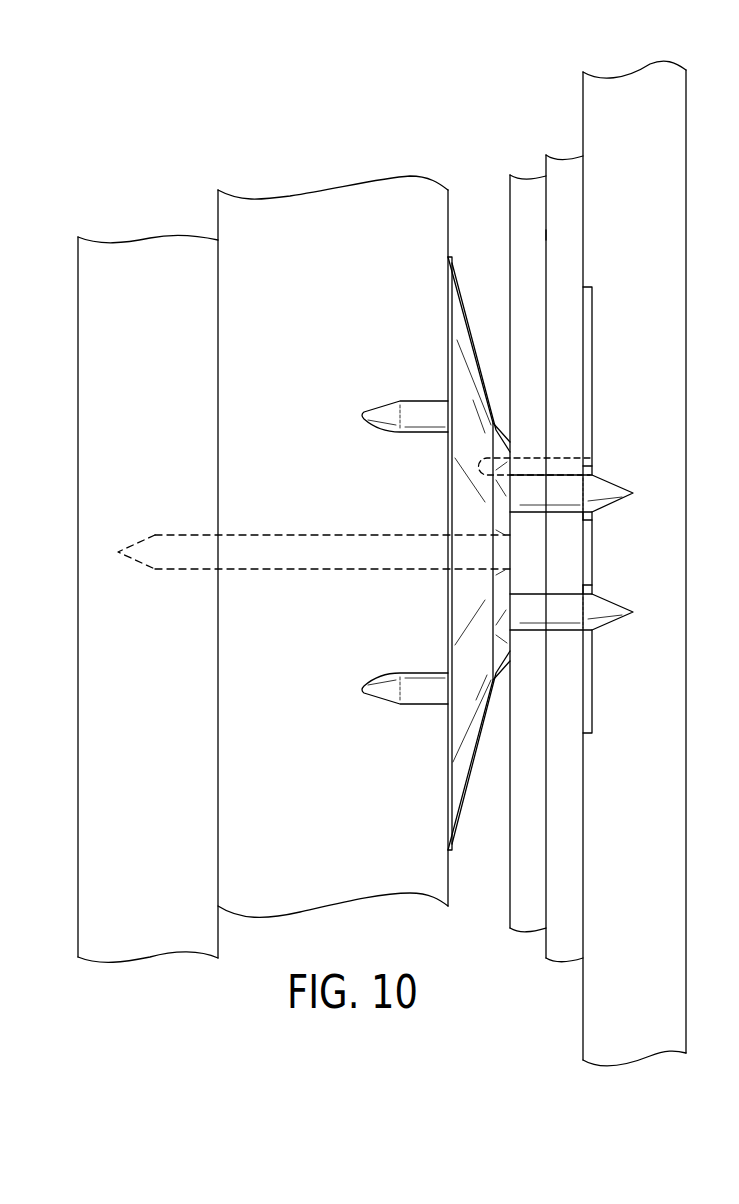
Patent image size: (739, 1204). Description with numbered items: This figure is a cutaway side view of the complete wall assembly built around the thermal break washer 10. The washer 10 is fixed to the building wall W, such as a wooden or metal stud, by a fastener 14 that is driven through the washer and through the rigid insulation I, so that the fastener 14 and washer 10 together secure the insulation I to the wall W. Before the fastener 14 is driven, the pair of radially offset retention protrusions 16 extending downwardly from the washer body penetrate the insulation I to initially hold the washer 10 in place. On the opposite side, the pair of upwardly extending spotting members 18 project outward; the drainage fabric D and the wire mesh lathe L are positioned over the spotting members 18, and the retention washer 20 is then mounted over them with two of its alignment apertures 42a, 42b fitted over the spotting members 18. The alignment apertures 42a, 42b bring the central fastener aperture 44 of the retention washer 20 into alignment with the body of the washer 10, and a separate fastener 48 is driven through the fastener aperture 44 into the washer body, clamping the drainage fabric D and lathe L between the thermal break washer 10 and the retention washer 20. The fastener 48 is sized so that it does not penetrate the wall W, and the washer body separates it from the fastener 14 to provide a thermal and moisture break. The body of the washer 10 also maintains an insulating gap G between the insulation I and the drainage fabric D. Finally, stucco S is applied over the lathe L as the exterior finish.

The wall W is at (102, 283).
The insulation I is at (265, 218).
The insulating gap G is at (472, 205).
The drainage fabric D is at (533, 193).
The wire mesh lathe L is at (560, 227).
The stucco S is at (638, 85).
The retention washer 20 is at (593, 322).
The thermal break washer 10 is at (467, 790).
The retention protrusions 16 is at (416, 400).
The spotting members 18 is at (590, 477).
The alignment aperture 42a is at (593, 517).
The alignment aperture 42b is at (593, 632).
The fastener aperture 44 is at (590, 470).
The fastener 48 is at (590, 450).
The fastener 14 is at (305, 557).